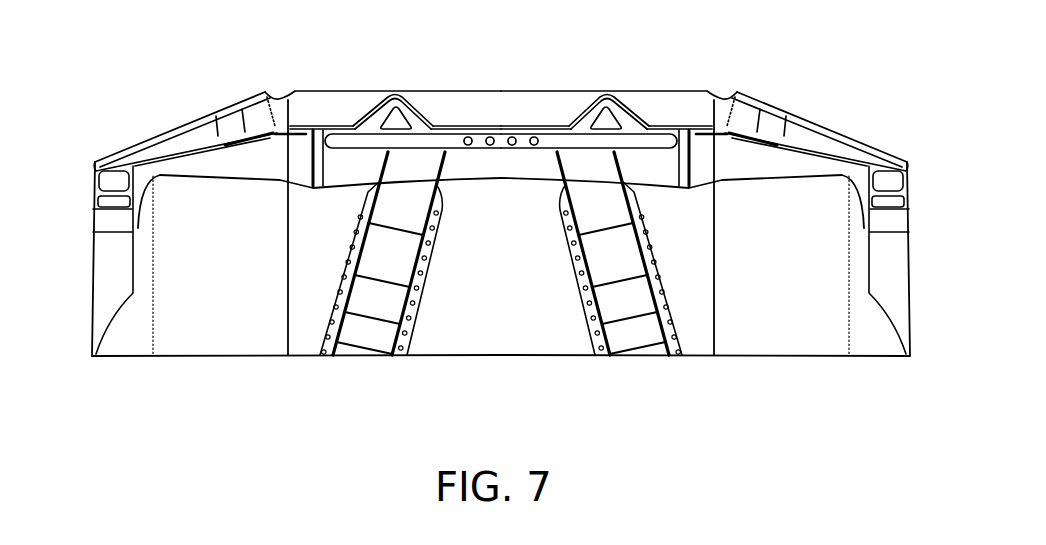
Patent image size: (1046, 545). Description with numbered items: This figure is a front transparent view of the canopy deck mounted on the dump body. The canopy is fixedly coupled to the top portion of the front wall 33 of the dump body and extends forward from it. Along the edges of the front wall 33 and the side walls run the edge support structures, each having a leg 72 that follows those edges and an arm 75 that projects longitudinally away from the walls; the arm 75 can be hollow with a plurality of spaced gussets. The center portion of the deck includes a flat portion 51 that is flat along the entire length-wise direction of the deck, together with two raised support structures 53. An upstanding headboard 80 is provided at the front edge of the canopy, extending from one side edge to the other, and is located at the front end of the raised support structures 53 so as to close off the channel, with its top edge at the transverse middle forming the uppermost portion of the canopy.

The upstanding headboard 80 is at (683, 91).
The raised support structures 53 is at (397, 97).
The flat portion 51 is at (492, 130).
The arm 75 is at (108, 185).
The leg 72 is at (120, 258).
The front wall 33 is at (306, 330).